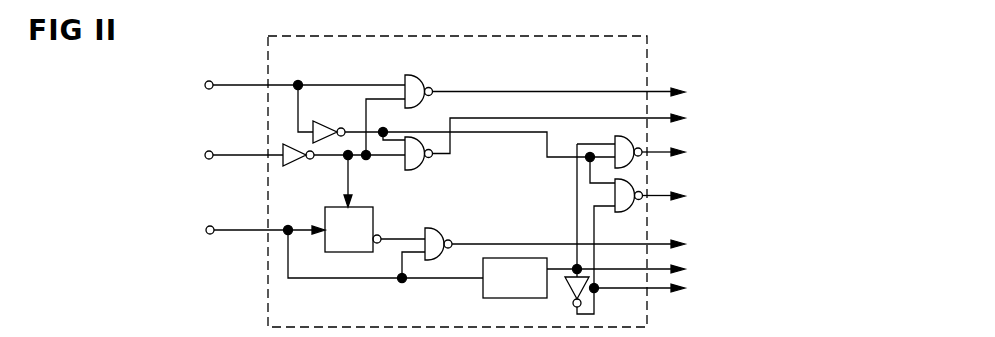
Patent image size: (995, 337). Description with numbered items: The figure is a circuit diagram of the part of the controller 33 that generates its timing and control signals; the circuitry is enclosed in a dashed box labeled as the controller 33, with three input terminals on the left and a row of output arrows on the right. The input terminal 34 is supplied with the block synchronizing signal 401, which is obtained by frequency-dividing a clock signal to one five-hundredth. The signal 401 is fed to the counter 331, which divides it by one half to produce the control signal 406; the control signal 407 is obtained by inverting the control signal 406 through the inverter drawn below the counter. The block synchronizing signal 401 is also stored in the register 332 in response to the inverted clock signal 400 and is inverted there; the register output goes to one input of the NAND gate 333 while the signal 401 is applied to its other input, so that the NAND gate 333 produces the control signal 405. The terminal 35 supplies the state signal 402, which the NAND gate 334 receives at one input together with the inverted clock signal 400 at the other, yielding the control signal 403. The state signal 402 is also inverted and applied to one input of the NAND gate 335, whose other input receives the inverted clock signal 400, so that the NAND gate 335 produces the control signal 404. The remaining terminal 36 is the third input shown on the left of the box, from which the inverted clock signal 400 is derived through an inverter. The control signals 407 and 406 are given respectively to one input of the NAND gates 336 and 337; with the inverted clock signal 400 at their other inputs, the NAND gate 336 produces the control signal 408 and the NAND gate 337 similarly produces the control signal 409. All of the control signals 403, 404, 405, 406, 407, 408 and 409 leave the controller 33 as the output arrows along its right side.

The controller 33 is at (647, 36).
The input terminal 34 is at (209, 226).
The terminal 35 is at (208, 81).
The input terminal 36 is at (208, 151).
The counter 331 is at (523, 258).
The register 332 is at (374, 210).
The NAND gate 333 is at (446, 232).
The NAND gate 334 is at (409, 78).
The NAND gate 335 is at (416, 170).
The NAND gate 336 is at (612, 137).
The NAND gate 337 is at (636, 187).
The inverted clock signal 400 is at (277, 160).
The block synchronizing signal 401 is at (247, 231).
The state signal 402 is at (286, 84).
The control signal 403 is at (662, 91).
The control signal 404 is at (666, 117).
The control signal 405 is at (666, 243).
The control signal 406 is at (666, 268).
The control signal 407 is at (668, 287).
The control signal 408 is at (666, 151).
The control signal 409 is at (666, 195).